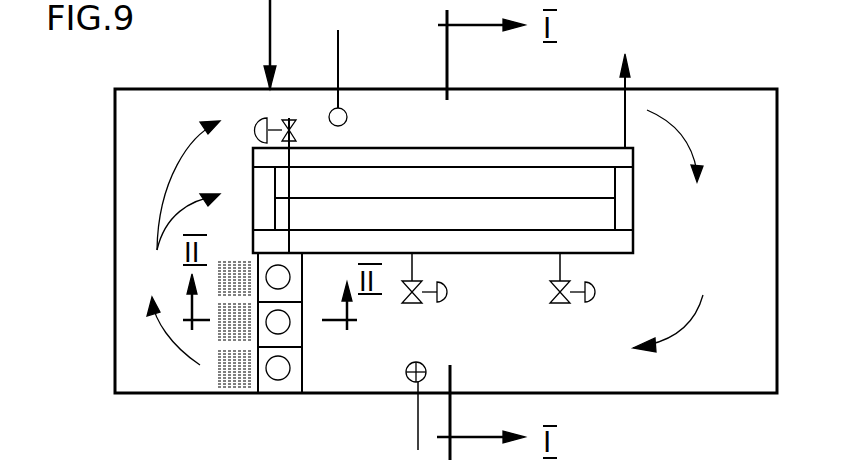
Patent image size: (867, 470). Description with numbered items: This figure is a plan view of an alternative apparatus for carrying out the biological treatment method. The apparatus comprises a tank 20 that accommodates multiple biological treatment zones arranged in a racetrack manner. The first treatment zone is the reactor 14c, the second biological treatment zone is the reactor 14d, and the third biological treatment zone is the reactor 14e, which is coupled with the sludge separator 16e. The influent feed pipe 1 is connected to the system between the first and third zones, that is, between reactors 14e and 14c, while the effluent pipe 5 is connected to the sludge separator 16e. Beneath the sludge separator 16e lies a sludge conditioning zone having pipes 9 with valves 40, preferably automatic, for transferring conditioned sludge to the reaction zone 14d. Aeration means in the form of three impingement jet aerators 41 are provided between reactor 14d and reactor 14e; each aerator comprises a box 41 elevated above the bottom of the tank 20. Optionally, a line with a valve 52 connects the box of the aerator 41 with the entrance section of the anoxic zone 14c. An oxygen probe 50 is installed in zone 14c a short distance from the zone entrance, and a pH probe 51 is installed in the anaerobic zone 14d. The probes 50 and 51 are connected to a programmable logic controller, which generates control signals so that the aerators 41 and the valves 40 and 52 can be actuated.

The influent feed pipe 1 is at (268, 32).
The effluent pipe 5 is at (631, 80).
The pipes 9 is at (486, 288).
The reactor 14c is at (575, 134).
The reactor 14d is at (553, 384).
The reactor 14e is at (182, 291).
The sludge separator 16e is at (597, 210).
The tank 20 is at (115, 266).
The valves 40 is at (595, 292).
The impingement jet aerators 41 is at (295, 278).
The oxygen probe 50 is at (345, 50).
The pH probe 51 is at (420, 413).
The valve 52 is at (262, 128).